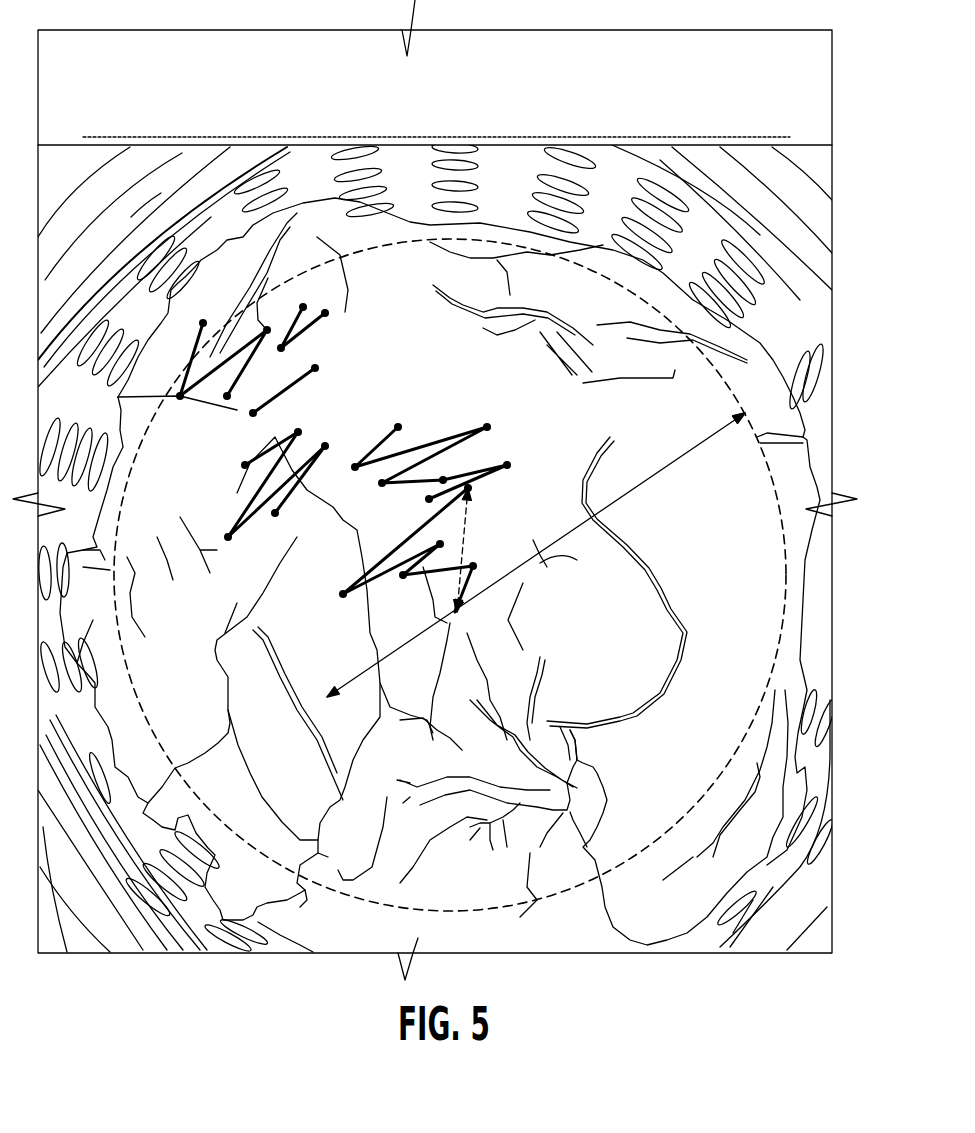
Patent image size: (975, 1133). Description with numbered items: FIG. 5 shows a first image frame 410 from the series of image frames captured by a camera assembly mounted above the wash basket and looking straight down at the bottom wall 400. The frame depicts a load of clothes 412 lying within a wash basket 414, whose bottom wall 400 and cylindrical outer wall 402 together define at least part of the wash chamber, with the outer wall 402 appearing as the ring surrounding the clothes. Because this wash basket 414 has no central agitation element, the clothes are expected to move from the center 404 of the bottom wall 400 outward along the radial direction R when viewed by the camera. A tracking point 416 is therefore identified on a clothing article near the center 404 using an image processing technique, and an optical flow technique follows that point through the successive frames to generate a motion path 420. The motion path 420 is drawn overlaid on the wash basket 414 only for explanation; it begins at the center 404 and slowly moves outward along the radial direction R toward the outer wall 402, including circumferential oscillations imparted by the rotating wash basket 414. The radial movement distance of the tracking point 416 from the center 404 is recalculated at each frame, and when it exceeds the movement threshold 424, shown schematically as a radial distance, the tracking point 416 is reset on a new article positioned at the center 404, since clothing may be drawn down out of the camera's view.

The bottom wall 400 is at (650, 676).
The outer wall 402 is at (803, 320).
The center 404 is at (472, 621).
The first image frame 410 is at (860, 115).
The load of clothes 412 is at (592, 428).
The wash basket 414 is at (792, 222).
The tracking point 416 is at (300, 432).
The motion path 420 is at (437, 433).
The movement threshold 424 is at (672, 465).
The radial direction R is at (358, 672).